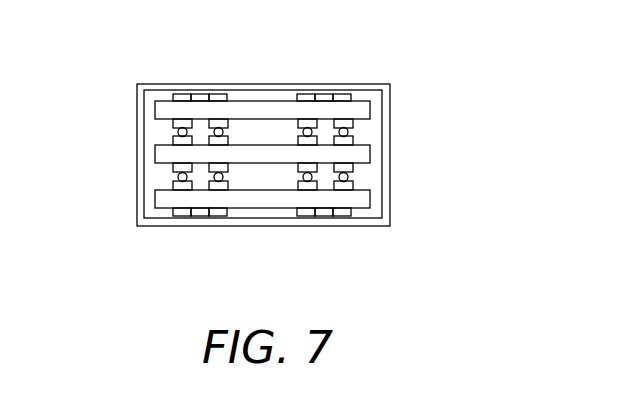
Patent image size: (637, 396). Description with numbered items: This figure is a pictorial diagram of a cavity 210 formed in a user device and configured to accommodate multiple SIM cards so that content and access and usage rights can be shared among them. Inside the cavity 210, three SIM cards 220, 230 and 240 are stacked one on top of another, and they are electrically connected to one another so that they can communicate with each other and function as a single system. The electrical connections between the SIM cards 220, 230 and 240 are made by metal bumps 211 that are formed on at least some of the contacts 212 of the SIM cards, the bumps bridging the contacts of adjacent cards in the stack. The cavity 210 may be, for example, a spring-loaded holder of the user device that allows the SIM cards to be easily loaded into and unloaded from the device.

The cavity 210 is at (390, 86).
The metal bumps 211 is at (348, 177).
The contacts 212 is at (228, 125).
The SIM card 220 is at (173, 198).
The SIM card 230 is at (173, 155).
The SIM card 240 is at (175, 110).